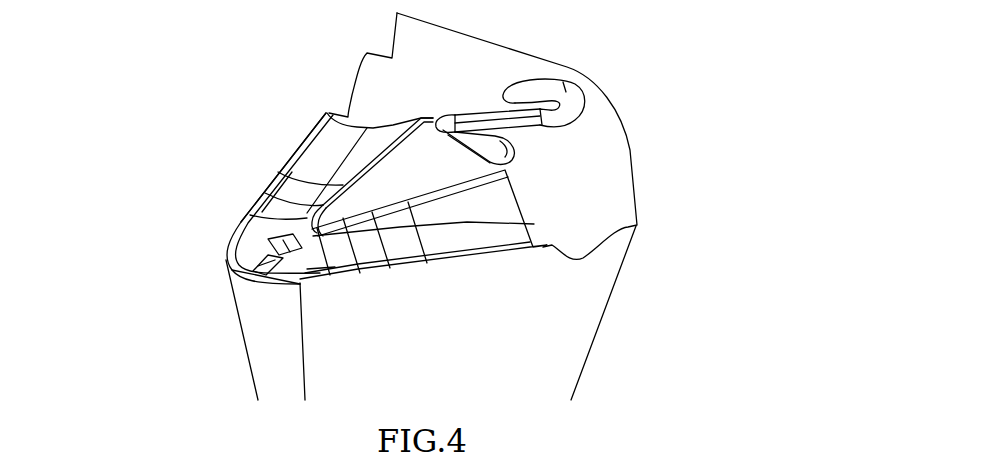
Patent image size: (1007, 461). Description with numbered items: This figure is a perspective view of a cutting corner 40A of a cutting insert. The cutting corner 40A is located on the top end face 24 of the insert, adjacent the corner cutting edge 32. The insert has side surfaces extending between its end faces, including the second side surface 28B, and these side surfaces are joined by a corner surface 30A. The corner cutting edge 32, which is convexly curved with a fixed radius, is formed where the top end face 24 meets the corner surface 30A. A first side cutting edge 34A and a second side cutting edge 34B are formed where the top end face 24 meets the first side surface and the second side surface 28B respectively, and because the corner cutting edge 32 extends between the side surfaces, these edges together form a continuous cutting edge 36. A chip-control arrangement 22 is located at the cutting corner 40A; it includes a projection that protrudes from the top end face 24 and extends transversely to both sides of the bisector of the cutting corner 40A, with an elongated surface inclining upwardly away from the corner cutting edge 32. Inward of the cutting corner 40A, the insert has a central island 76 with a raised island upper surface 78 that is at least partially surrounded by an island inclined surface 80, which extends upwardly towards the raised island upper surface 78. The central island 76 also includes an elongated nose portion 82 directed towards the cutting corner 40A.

The chip-control arrangement 22 is at (247, 196).
The top end face 24 is at (588, 208).
The central island 76 is at (489, 79).
The elongated nose portion 82 is at (413, 162).
The raised island upper surface 78 is at (436, 167).
The island inclined surface 80 is at (487, 205).
The cutting corner 40A is at (360, 269).
The second side surface 28B is at (389, 307).
The corner surface 30A is at (265, 350).
The first side cutting edge 34A is at (247, 210).
The second side cutting edge 34B is at (358, 270).
The corner cutting edge 32 is at (234, 282).
The continuous cutting edge 36 is at (62, 268).